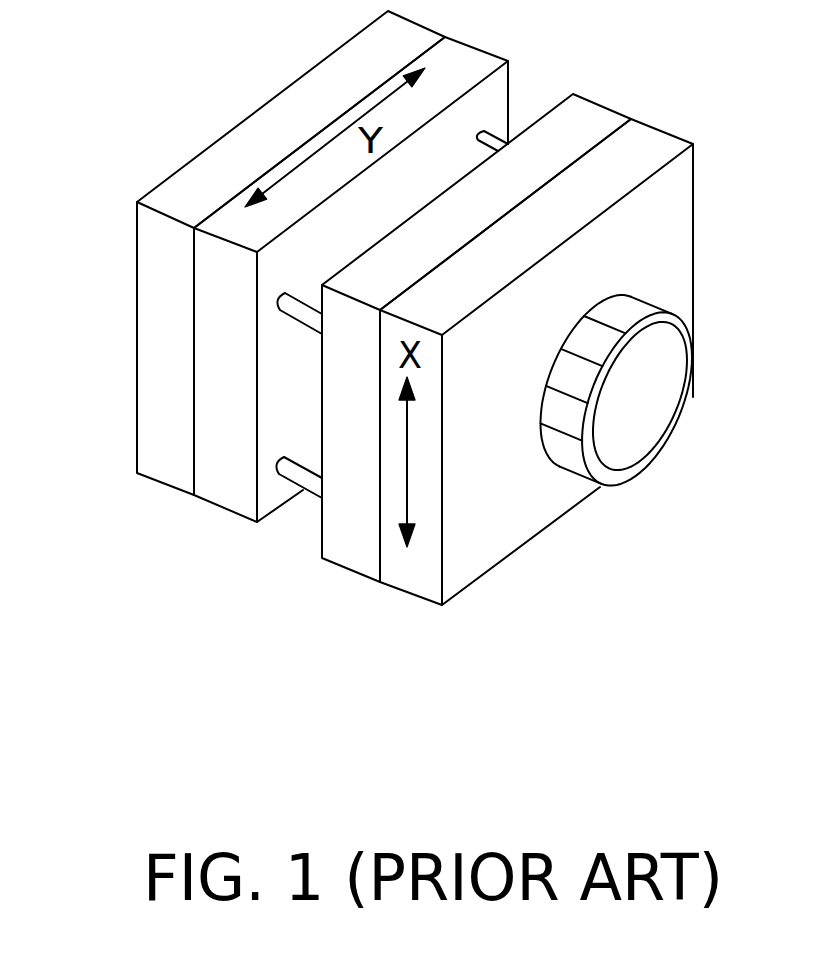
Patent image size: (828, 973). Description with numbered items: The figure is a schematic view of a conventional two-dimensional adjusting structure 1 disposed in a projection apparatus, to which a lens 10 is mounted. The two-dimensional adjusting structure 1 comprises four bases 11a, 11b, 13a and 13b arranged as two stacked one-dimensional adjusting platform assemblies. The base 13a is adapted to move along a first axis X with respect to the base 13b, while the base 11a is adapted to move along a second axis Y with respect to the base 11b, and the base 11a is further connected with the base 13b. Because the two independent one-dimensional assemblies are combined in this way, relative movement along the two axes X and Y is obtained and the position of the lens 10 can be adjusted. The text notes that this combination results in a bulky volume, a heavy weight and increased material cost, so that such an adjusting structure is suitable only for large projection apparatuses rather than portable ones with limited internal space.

The two-dimensional adjusting structure 1 is at (367, 398).
The lens 10 is at (668, 393).
The base 11a is at (223, 480).
The base 11b is at (168, 465).
The base 13a is at (507, 405).
The base 13b is at (360, 543).